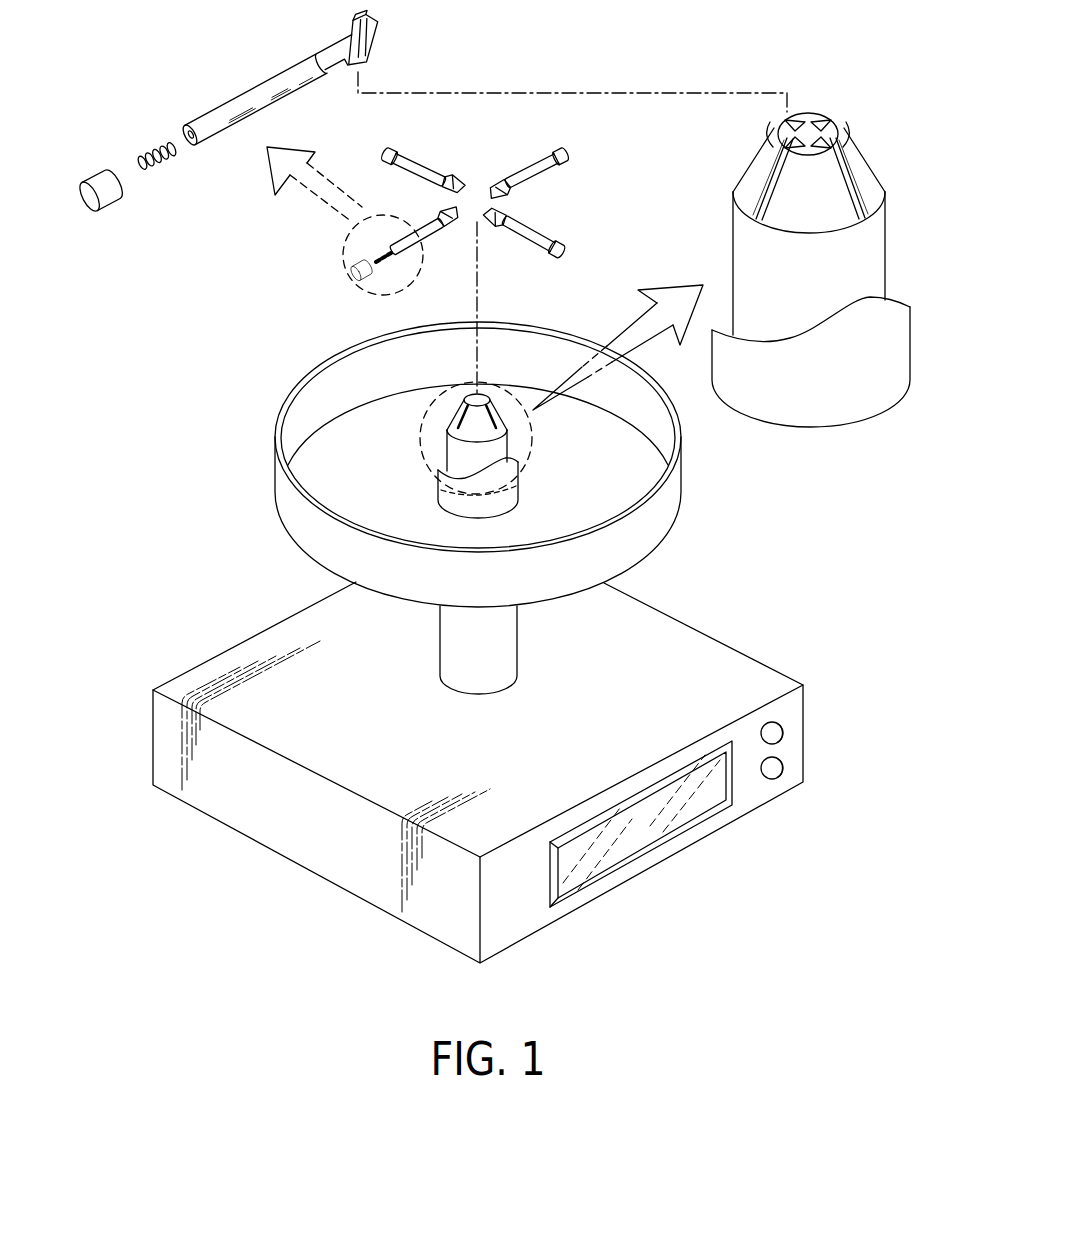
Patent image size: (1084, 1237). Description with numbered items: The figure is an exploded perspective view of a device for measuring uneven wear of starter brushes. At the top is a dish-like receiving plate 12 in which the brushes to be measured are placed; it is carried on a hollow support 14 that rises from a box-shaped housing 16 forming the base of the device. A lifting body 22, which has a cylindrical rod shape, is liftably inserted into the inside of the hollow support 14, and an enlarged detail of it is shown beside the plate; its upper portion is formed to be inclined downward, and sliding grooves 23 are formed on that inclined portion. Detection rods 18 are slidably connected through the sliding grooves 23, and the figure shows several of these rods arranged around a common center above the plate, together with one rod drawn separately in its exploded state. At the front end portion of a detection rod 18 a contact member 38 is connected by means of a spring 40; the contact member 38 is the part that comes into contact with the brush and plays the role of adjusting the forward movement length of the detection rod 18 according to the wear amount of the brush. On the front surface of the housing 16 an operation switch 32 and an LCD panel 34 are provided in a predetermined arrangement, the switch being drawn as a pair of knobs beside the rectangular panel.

The receiving plate 12 is at (461, 590).
The hollow support 14 is at (464, 664).
The housing 16 is at (669, 677).
The detection rod 18 is at (260, 76).
The lifting body 22 is at (834, 96).
The sliding grooves 23 is at (772, 163).
The operation switch 32 is at (812, 735).
The LCD panel 34 is at (624, 835).
The contact member 38 is at (103, 176).
The spring 40 is at (153, 148).